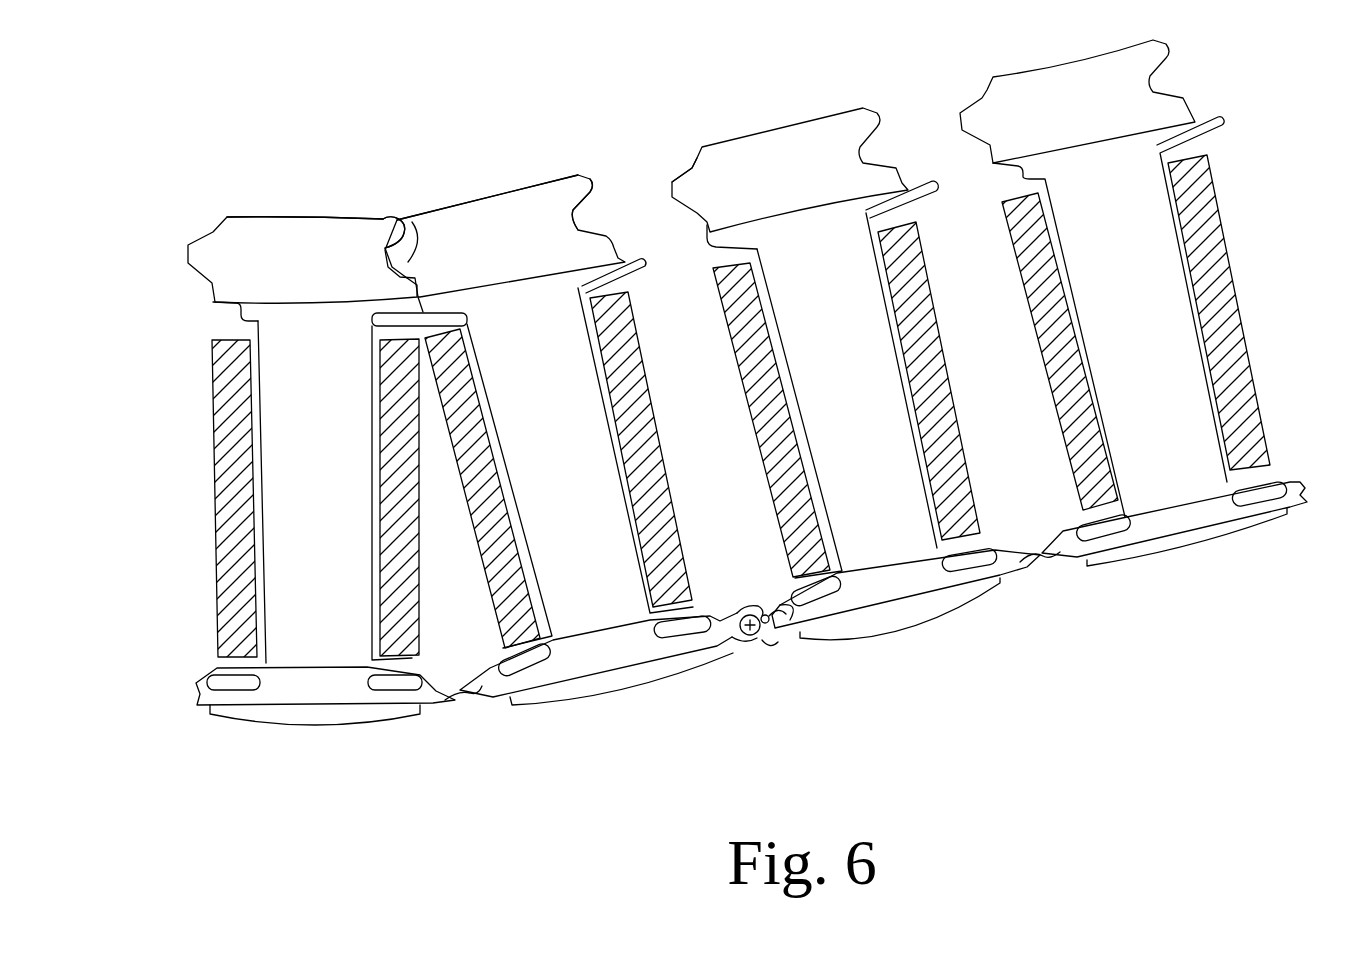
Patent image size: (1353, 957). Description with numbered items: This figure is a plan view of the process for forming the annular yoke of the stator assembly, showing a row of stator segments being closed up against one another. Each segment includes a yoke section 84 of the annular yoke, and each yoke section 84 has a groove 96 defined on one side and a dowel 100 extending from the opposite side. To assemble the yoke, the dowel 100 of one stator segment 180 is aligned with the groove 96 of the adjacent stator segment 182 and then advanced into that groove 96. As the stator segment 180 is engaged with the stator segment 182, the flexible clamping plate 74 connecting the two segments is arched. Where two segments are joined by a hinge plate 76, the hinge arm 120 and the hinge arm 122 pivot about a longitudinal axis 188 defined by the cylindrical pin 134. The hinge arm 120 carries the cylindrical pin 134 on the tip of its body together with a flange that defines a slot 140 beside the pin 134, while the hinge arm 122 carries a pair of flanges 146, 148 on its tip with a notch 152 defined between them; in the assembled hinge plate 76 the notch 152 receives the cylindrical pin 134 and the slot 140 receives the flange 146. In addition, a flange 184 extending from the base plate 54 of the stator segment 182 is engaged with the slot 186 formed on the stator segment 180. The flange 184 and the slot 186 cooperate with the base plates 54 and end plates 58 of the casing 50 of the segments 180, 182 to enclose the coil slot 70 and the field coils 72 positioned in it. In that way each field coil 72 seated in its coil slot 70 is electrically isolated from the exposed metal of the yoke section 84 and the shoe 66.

The casing 50 is at (592, 455).
The base plate 54 is at (537, 296).
The end plate 58 is at (898, 610).
The shoe 66 is at (957, 600).
The coil slot 70 is at (443, 664).
The field coil 72 is at (215, 432).
The flexible clamping plate 74 is at (472, 692).
The hinge plate 76 is at (721, 684).
The yoke section 84 is at (300, 226).
The groove 96 is at (393, 228).
The dowel 100 is at (409, 240).
The hinge arm 120 is at (780, 642).
The hinge arm 122 is at (725, 642).
The cylindrical pin 134 is at (760, 618).
The slot 140 is at (725, 597).
The flange 146 is at (790, 620).
The flange 148 is at (752, 645).
The notch 152 is at (783, 656).
The stator segment 180 is at (512, 150).
The stator segment 182 is at (262, 235).
The flange 184 is at (632, 252).
The slot 186 is at (430, 292).
The longitudinal axis 188 is at (748, 612).